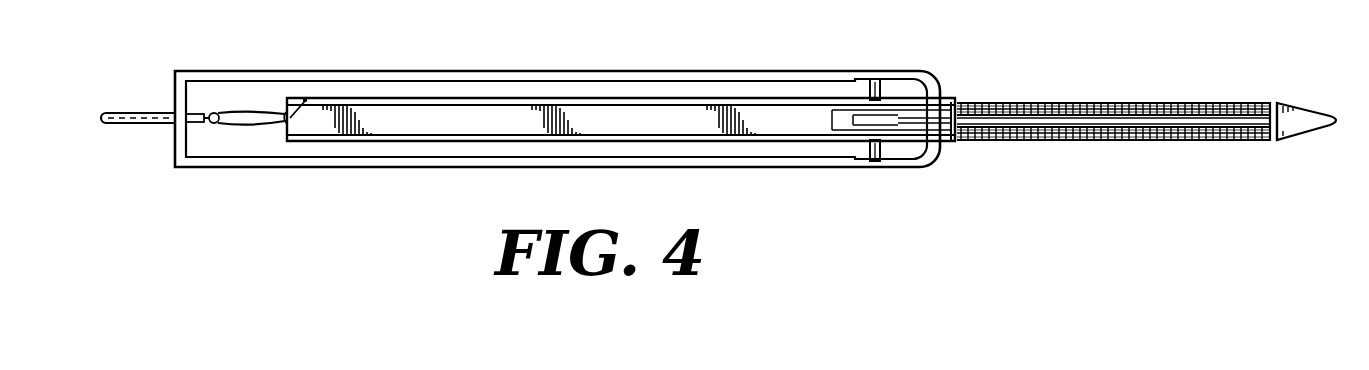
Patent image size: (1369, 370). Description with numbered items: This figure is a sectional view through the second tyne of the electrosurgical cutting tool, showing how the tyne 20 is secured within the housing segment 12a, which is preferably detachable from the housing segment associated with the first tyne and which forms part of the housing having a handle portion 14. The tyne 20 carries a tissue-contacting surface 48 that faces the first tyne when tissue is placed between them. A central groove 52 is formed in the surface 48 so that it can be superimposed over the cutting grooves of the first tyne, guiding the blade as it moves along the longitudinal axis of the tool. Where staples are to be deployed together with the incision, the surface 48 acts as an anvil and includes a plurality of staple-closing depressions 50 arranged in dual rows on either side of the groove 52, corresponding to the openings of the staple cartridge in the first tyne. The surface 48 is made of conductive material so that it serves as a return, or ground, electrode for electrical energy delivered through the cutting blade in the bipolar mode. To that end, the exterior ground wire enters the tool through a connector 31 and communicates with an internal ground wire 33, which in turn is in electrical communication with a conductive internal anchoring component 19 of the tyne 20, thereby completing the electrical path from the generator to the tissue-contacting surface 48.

The housing segment 12a is at (224, 170).
The handle portion 14 is at (578, 74).
The conductive internal anchoring component 19 is at (388, 100).
The second tyne 20 is at (1217, 142).
The connector 31 is at (145, 112).
The internal ground wire 33 is at (258, 120).
The tissue-contacting surface 48 is at (1152, 138).
The staple-closing depressions 50 is at (1108, 103).
The central groove 52 is at (1182, 118).